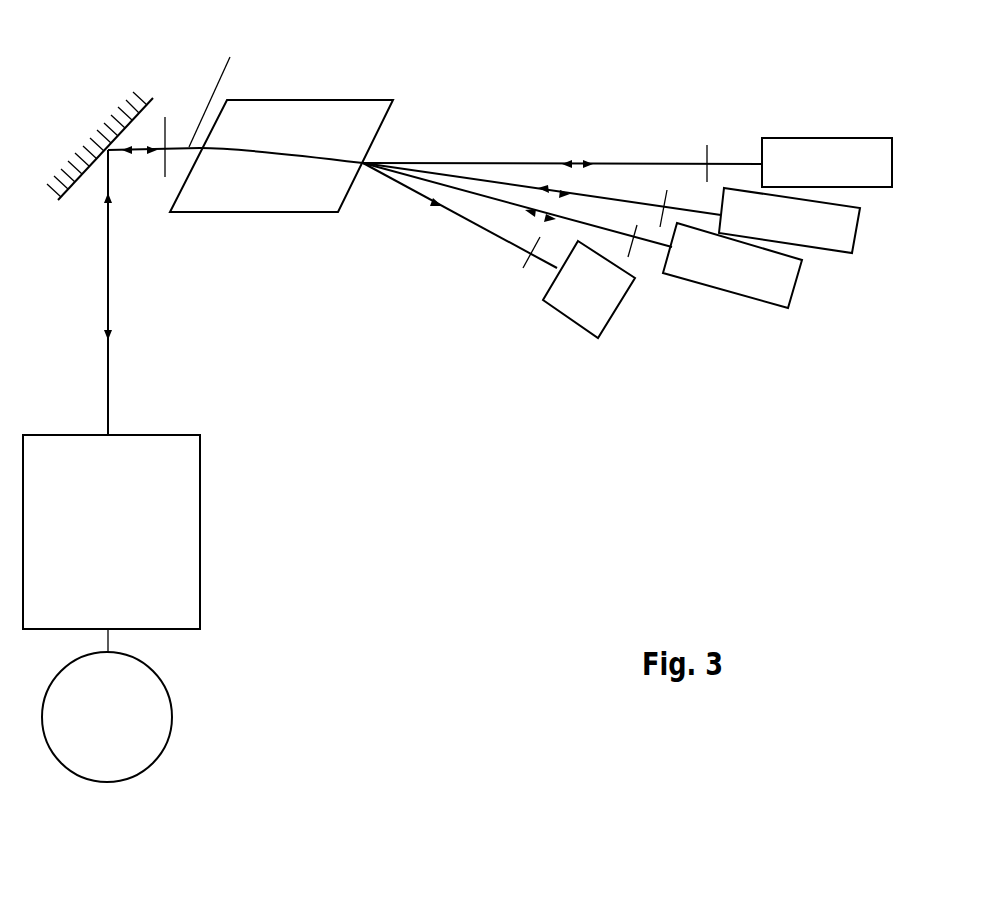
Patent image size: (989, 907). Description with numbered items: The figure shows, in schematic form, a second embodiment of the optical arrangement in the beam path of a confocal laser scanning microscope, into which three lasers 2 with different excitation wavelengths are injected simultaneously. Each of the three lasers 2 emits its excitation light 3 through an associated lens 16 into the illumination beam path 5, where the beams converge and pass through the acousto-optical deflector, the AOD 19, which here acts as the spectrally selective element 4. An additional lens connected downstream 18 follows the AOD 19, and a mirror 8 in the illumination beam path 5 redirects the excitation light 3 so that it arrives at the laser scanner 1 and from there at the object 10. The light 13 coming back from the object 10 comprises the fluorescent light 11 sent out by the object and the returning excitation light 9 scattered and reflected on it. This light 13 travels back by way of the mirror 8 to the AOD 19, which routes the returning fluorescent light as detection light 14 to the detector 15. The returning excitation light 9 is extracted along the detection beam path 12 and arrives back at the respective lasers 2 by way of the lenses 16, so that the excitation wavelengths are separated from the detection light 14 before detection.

The laser scanner 1 is at (200, 569).
The lasers 2 is at (870, 188).
The excitation light 3 is at (492, 198).
The spectrally selective element 4 is at (297, 100).
The illumination beam path 5 is at (125, 153).
The mirror 8 is at (110, 120).
The returning excitation light 9 is at (235, 290).
The object 10 is at (107, 705).
The fluorescent light 11 is at (108, 292).
The detection beam path 12 is at (410, 201).
The light coming from the object 13 is at (218, 79).
The detection light 14 is at (478, 223).
The detector 15 is at (567, 317).
The lenses 16 is at (710, 152).
The additional lens connected downstream 18 is at (167, 123).
The AOD 19 is at (281, 116).